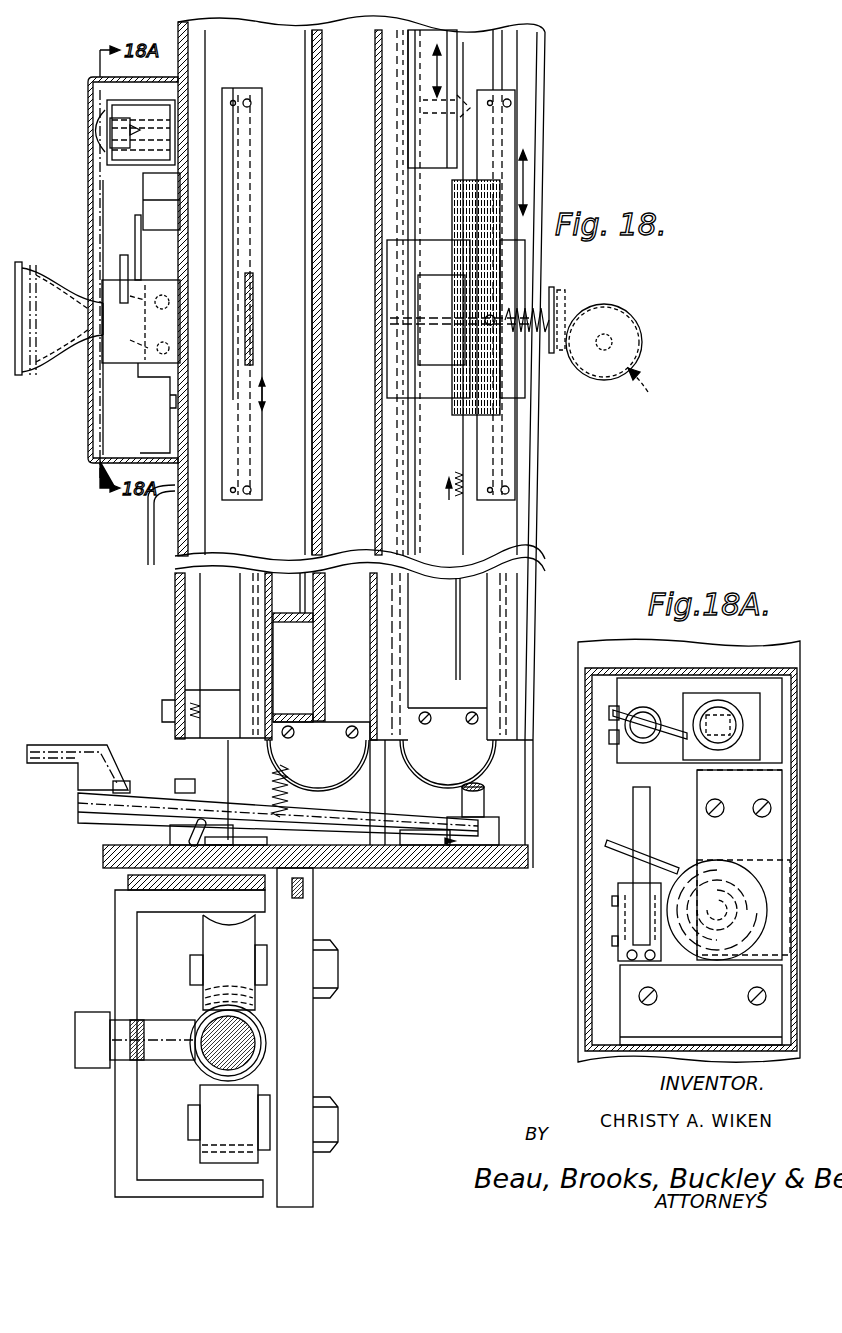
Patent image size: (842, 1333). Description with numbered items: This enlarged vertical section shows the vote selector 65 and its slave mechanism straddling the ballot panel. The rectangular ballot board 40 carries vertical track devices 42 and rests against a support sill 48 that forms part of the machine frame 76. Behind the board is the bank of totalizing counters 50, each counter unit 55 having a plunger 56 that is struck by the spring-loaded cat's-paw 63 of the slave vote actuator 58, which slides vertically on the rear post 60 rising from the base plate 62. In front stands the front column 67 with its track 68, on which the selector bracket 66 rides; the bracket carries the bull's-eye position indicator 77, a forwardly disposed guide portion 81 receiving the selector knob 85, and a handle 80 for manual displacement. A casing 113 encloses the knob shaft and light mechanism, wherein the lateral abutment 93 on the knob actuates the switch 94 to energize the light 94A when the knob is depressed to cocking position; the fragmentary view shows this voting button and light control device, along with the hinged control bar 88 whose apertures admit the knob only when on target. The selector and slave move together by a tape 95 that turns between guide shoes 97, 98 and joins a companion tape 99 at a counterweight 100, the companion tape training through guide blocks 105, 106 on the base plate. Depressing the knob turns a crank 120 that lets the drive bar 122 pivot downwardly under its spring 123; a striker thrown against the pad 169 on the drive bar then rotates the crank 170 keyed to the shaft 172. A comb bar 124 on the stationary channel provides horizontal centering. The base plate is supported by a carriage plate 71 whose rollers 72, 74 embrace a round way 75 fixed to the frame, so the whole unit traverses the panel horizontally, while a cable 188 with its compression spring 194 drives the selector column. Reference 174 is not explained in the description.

In FIG. 18, the front column 67 is at (180, 28).
In FIG. 18, the outer casing wall 174 is at (518, 52).
In FIG. 18, the casing 113 is at (90, 98).
In FIG. 18A, the casing 113 is at (584, 808).
In FIG. 18, the light 94A is at (92, 135).
In FIG. 18, the switch 94 is at (138, 216).
In FIG. 18A, the switch 94 is at (646, 822).
In FIG. 18, the guide portion 81 is at (165, 270).
In FIG. 18A, the guide portion 81 is at (636, 922).
In FIG. 18, the lateral abutment 93 is at (120, 262).
In FIG. 18A, the lateral abutment 93 is at (652, 860).
In FIG. 18, the selector knob 85 is at (20, 278).
In FIG. 18A, the selector knob 85 is at (758, 870).
In FIG. 18, the vote selector 65 is at (84, 355).
In FIG. 18A, the vote selector 65 is at (568, 932).
In FIG. 18, the counterweight 100 is at (432, 157).
In FIG. 18, the vertical track devices 42 is at (302, 232).
In FIG. 18, the vote selector position indicator 77 is at (257, 312).
In FIG. 18, the ballot board 40 is at (320, 344).
In FIG. 18, the bracket 66 is at (268, 396).
In FIG. 18, the post 60 is at (540, 268).
In FIG. 18, the cat's-paw 63 is at (553, 286).
In FIG. 18, the plunger 56 is at (562, 308).
In FIG. 18, the counter unit 55 is at (644, 346).
In FIG. 18, the bank of totalizing counters 50 is at (652, 395).
In FIG. 18, the slave vote actuator 58 is at (548, 392).
In FIG. 18, the track 68 is at (262, 514).
In FIG. 18, the compression spring 194 is at (452, 500).
In FIG. 18, the handle 80 is at (148, 520).
In FIG. 18, the control bar 88 is at (236, 590).
In FIG. 18, the support sill 48 is at (296, 623).
In FIG. 18, the cable 188 is at (455, 586).
In FIG. 18, the tape 95 is at (258, 742).
In FIG. 18A, the tape 95 is at (707, 757).
In FIG. 18, the guide shoe 97 is at (330, 760).
In FIG. 18, the spring 123 is at (274, 790).
In FIG. 18, the drive bar 122 is at (205, 812).
In FIG. 18, the pad 169 is at (45, 760).
In FIG. 18, the crank 120 is at (190, 836).
In FIG. 18, the guide shoe 98 is at (354, 811).
In FIG. 18, the guide block 106 is at (422, 796).
In FIG. 18, the guide block 105 is at (460, 760).
In FIG. 18, the companion tape 99 is at (490, 752).
In FIG. 18, the shaft 172 is at (484, 806).
In FIG. 18, the comb bar 124 is at (128, 886).
In FIG. 18, the base plate 62 is at (398, 858).
In FIG. 18, the crank 170 is at (440, 832).
In FIG. 18, the roller 72 is at (213, 935).
In FIG. 18, the carriage plate 71 is at (306, 925).
In FIG. 18, the round way 75 is at (268, 1043).
In FIG. 18, the machine frame 76 is at (115, 1085).
In FIG. 18, the roller 74 is at (205, 1150).